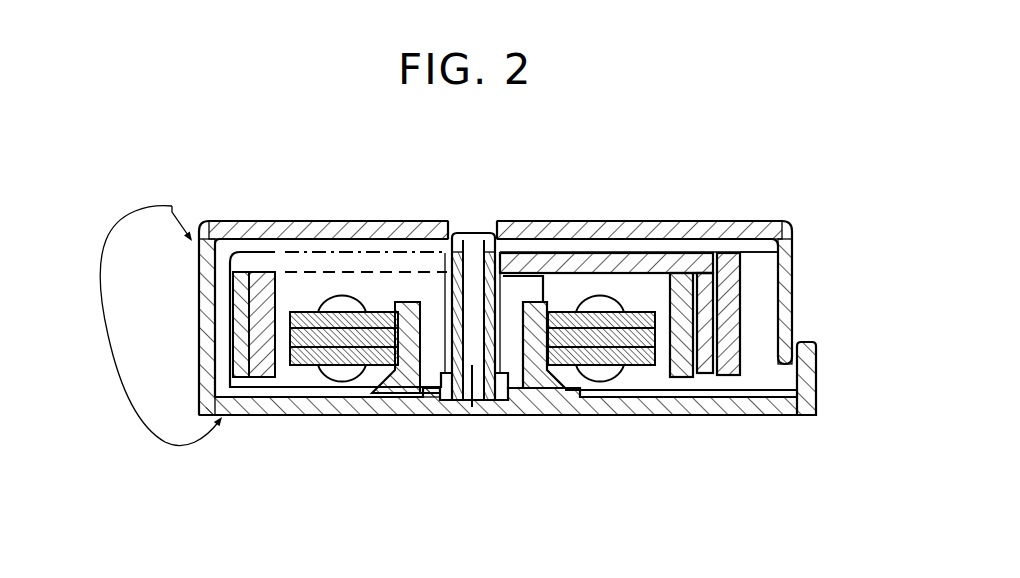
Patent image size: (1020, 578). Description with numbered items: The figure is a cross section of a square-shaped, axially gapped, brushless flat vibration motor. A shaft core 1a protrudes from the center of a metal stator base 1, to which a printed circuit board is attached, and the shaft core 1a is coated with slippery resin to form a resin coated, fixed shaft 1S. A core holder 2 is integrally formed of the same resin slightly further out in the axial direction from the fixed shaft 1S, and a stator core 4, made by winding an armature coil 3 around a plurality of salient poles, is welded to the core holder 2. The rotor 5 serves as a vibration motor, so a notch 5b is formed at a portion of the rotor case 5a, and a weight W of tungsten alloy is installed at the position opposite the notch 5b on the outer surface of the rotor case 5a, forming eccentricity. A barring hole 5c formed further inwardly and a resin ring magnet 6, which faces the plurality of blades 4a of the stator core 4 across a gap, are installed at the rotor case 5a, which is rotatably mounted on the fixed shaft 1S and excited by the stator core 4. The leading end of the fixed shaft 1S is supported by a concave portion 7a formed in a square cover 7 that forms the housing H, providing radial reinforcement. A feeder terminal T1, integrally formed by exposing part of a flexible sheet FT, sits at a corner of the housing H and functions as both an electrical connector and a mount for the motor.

The metal stator base 1 is at (690, 413).
The shaft core 1a is at (470, 413).
The resin coated, fixed shaft 1S is at (512, 228).
The core holder 2 is at (535, 405).
The armature coil 3 is at (595, 335).
The stator core 4 is at (750, 261).
The blades 4a is at (650, 413).
The rotor 5 is at (790, 230).
The rotor case 5a is at (577, 258).
The notch 5b is at (278, 262).
The barring hole 5c is at (447, 317).
The resin ring magnet 6 is at (683, 335).
The square cover 7 is at (203, 273).
The concave portion 7a is at (444, 235).
The housing H is at (161, 314).
The weight W is at (728, 337).
The feeder terminal T1 is at (810, 389).
The flexible sheet FT is at (757, 415).